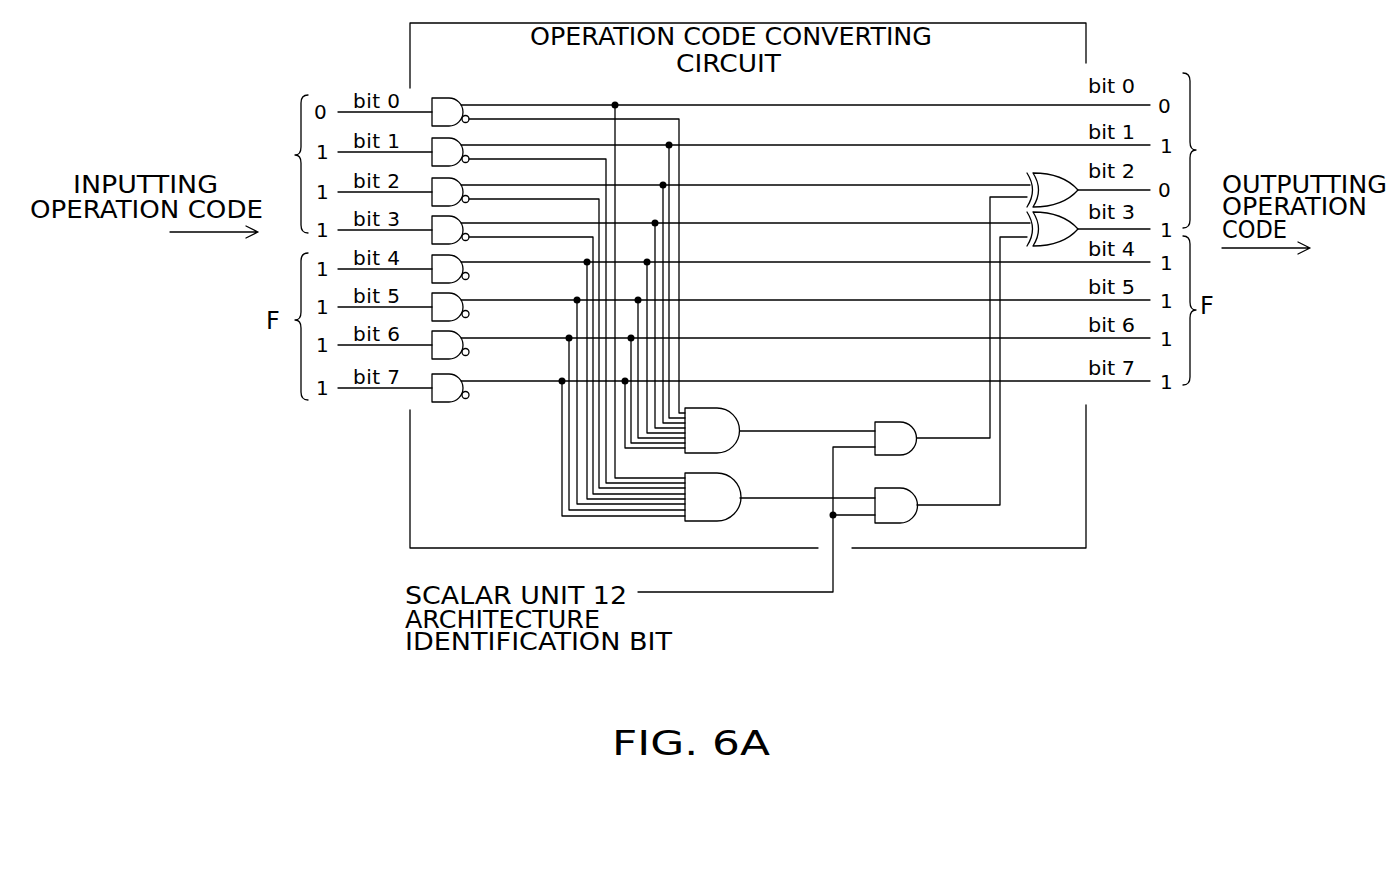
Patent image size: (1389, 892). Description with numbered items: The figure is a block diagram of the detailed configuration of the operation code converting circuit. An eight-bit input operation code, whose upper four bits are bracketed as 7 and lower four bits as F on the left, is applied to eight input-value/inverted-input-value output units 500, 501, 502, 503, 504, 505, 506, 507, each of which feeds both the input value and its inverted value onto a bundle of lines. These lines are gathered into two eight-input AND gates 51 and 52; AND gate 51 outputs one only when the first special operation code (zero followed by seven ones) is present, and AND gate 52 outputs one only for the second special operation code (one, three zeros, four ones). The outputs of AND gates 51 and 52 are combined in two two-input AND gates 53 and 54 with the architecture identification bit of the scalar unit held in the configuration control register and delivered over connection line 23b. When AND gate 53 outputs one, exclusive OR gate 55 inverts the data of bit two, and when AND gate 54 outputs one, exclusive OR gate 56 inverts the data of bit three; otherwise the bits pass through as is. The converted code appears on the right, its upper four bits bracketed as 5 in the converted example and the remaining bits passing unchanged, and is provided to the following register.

The input-value/inverted-input-value output unit 500 is at (460, 97).
The input-value/inverted-input-value output unit 501 is at (461, 139).
The input-value/inverted-input-value output unit 502 is at (461, 179).
The input-value/inverted-input-value output unit 503 is at (461, 217).
The input-value/inverted-input-value output unit 504 is at (461, 256).
The input-value/inverted-input-value output unit 505 is at (461, 294).
The input-value/inverted-input-value output unit 506 is at (461, 332).
The input-value/inverted-input-value output unit 507 is at (462, 401).
The 8-input AND gate 51 is at (754, 398).
The 8-input AND gate 52 is at (754, 463).
The two-input AND gate 53 is at (912, 424).
The two-input AND gate 54 is at (912, 490).
The exclusive OR gate 55 is at (1031, 173).
The exclusive OR gate 56 is at (1042, 246).
The connection line 23b is at (756, 520).
The operation code field of inputting operation code 7 is at (289, 164).
The operation code field of outputting operation code 5 is at (1201, 150).